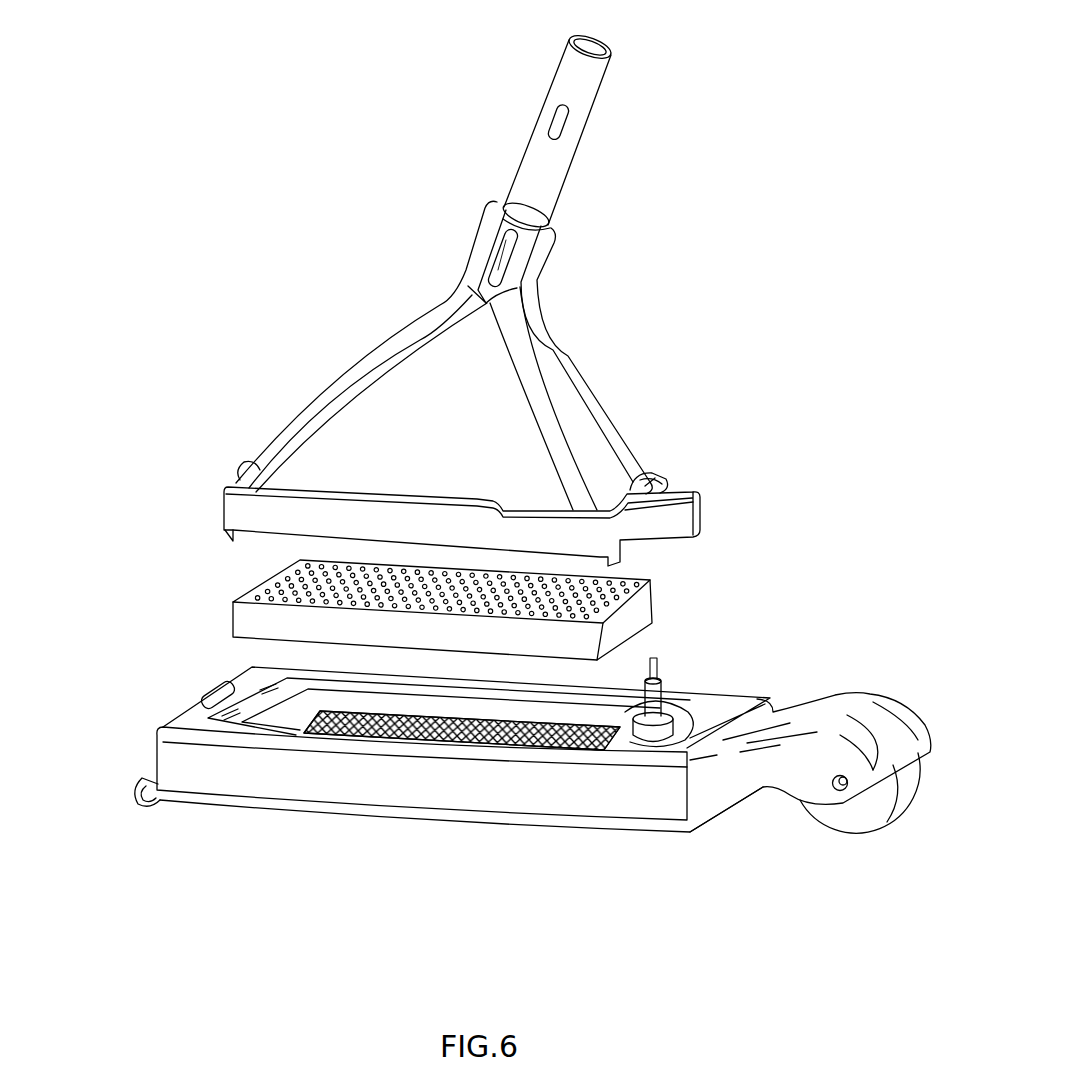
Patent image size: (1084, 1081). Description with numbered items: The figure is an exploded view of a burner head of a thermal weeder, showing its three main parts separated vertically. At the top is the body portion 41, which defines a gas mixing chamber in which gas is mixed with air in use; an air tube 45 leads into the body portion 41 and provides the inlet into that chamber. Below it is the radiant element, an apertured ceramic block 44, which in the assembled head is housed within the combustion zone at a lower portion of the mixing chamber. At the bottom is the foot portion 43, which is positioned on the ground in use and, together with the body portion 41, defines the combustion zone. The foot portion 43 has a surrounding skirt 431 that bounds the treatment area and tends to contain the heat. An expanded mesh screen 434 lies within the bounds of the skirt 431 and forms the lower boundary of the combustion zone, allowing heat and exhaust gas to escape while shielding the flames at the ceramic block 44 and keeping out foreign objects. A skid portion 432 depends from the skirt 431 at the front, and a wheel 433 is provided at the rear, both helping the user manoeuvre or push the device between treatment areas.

The body portion 41 is at (357, 365).
The air tube 45 is at (548, 168).
The apertured ceramic block 44 is at (628, 623).
The foot portion 43 is at (500, 768).
The skirt 431 is at (320, 793).
The skid portion 432 is at (137, 802).
The wheel 433 is at (867, 810).
The expanded mesh screen 434 is at (527, 747).